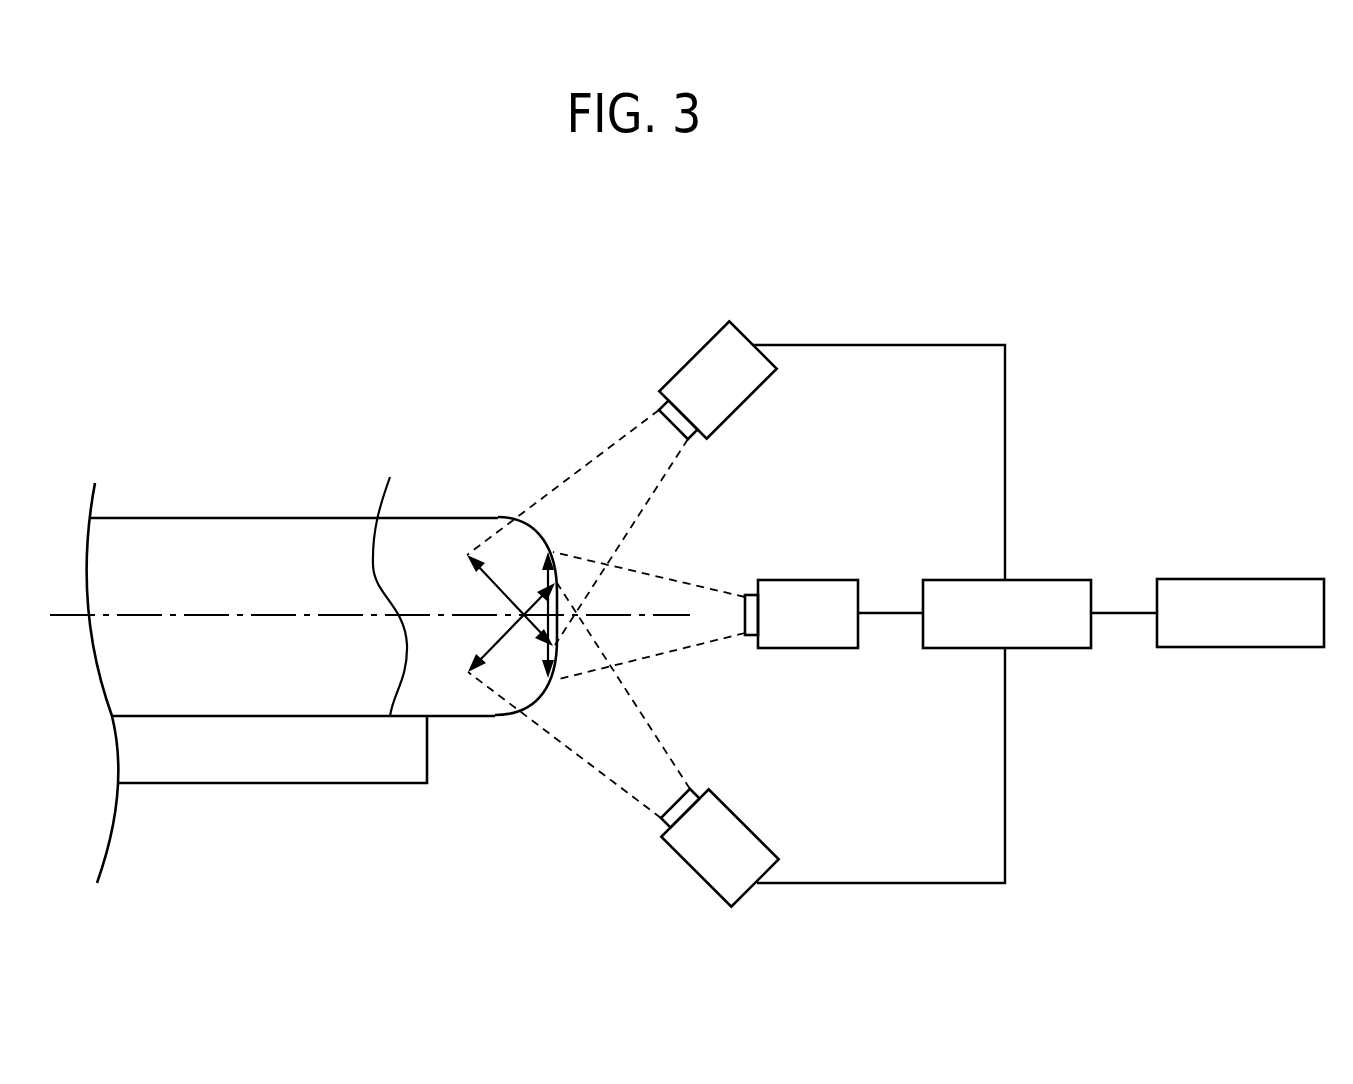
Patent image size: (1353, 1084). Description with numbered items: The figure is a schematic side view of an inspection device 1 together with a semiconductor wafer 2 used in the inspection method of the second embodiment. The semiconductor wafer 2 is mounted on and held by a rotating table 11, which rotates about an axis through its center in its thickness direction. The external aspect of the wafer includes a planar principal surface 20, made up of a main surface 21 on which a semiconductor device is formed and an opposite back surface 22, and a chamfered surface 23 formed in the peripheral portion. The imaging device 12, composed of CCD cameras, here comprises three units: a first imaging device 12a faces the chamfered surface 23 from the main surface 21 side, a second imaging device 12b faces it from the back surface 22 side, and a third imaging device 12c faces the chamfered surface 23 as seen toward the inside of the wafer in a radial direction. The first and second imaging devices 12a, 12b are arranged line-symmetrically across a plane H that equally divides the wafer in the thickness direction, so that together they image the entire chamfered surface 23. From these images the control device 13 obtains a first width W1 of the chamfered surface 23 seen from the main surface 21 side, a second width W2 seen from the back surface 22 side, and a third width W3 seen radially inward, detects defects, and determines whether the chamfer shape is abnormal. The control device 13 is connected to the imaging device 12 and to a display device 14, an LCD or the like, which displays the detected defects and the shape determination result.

The inspection device 1 is at (566, 296).
The semiconductor wafer 2 is at (261, 483).
The rotating table 11 is at (375, 784).
The imaging device 12 is at (695, 584).
The first imaging device 12a is at (740, 323).
The second imaging device 12b is at (745, 823).
The third imaging device 12c is at (838, 580).
The control device 13 is at (1053, 580).
The display device 14 is at (1262, 579).
The principal surface 20 is at (417, 441).
The main surface 21 is at (323, 516).
The back surface 22 is at (390, 579).
The chamfered surface 23 is at (545, 532).
The plane H is at (145, 617).
The first width W1 is at (497, 582).
The second width W2 is at (490, 651).
The third width W3 is at (551, 607).